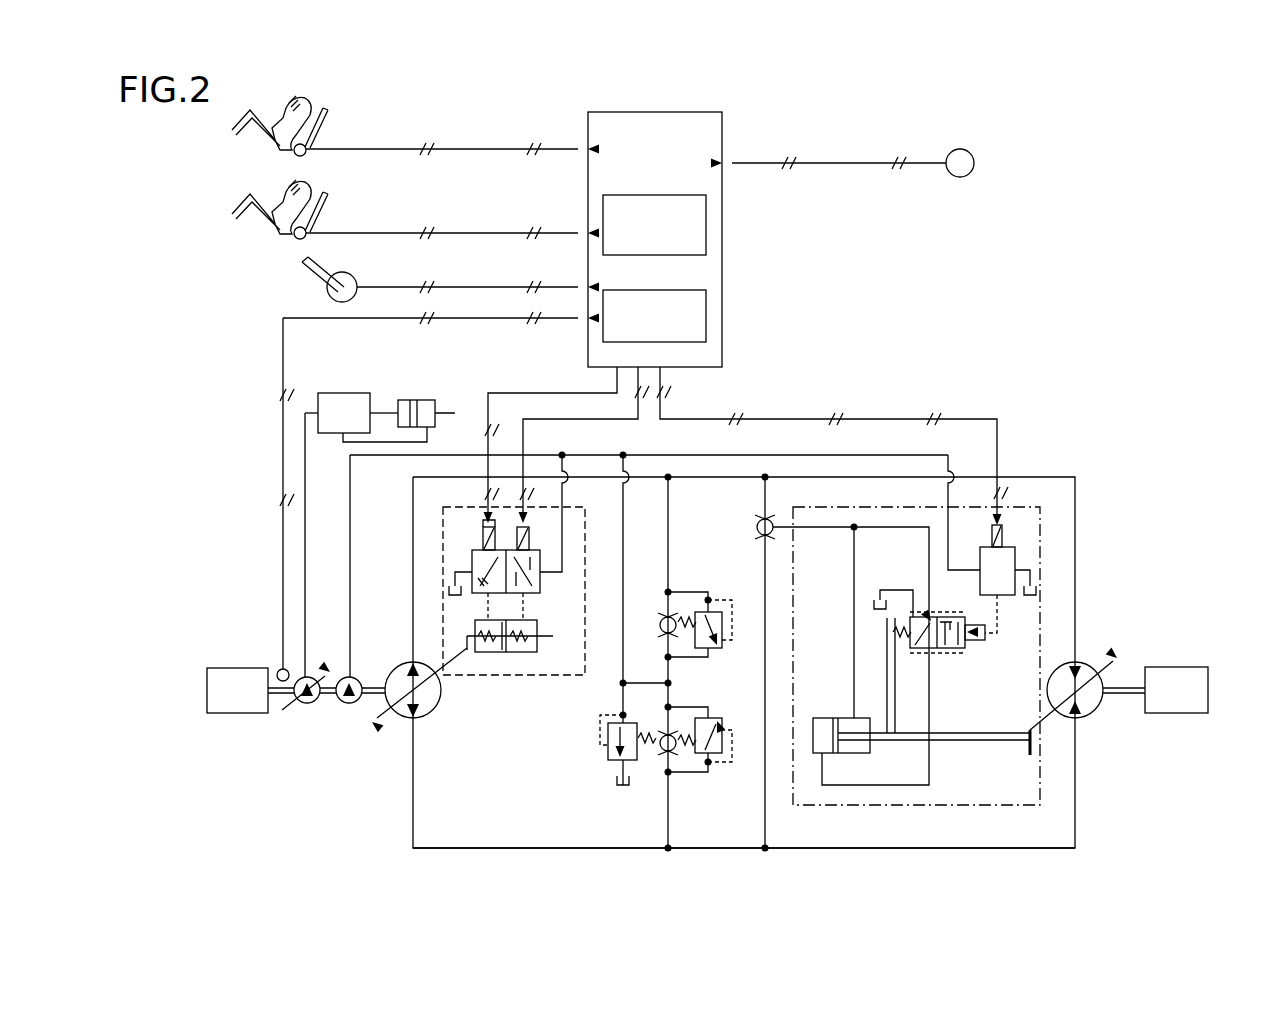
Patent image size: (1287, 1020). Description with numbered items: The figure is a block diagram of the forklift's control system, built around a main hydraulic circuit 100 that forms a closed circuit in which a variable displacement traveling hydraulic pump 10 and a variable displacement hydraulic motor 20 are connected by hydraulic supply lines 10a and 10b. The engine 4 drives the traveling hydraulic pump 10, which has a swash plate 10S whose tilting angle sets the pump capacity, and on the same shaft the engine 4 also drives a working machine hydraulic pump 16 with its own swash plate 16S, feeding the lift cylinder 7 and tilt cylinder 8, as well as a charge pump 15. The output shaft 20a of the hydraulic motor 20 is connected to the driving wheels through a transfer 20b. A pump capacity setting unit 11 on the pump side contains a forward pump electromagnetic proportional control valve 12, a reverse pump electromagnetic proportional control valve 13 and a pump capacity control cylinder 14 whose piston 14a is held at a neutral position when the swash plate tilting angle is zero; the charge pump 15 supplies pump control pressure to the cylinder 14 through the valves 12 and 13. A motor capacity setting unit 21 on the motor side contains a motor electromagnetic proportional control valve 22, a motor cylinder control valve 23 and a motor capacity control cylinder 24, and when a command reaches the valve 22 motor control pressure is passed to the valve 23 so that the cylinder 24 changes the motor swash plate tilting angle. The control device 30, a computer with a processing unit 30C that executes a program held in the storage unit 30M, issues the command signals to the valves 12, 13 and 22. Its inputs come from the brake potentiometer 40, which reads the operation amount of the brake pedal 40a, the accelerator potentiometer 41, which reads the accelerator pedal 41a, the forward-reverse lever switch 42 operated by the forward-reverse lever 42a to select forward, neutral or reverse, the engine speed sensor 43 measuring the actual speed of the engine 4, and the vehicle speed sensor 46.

The engine 4 is at (225, 713).
The lift cylinder 7 is at (380, 406).
The tilt cylinder 8 is at (405, 400).
The traveling hydraulic pump 10 is at (437, 705).
The swash plate 10S is at (390, 720).
The hydraulic supply line 10a is at (690, 480).
The hydraulic supply line 10b is at (480, 848).
The pump capacity setting unit 11 is at (514, 614).
The forward pump electromagnetic proportional control valve 12 is at (535, 593).
The reverse pump electromagnetic proportional control valve 13 is at (480, 593).
The pump capacity control cylinder 14 is at (525, 652).
The piston 14a is at (506, 654).
The charge pump 15 is at (349, 703).
The working machine hydraulic pump 16 is at (307, 703).
The swash plate 16S is at (285, 710).
The hydraulic motor 20 is at (1087, 713).
The output shaft 20a is at (1130, 696).
The transfer 20b is at (1162, 667).
The motor capacity setting unit 21 is at (916, 671).
The motor electromagnetic proportional control valve 22 is at (1002, 597).
The motor cylinder control valve 23 is at (955, 663).
The motor capacity control cylinder 24 is at (818, 718).
The control device 30 is at (655, 222).
The processing unit 30C is at (655, 195).
The storage unit 30M is at (655, 290).
The brake potentiometer 40 is at (315, 138).
The brake pedal 40a is at (327, 108).
The accelerator potentiometer 41 is at (315, 222).
The accelerator pedal 41a is at (327, 192).
The forward-reverse lever switch 42 is at (327, 287).
The forward-reverse lever 42a is at (305, 263).
The engine speed sensor 43 is at (278, 668).
The vehicle speed sensor 46 is at (975, 163).
The main hydraulic circuit 100 is at (985, 860).